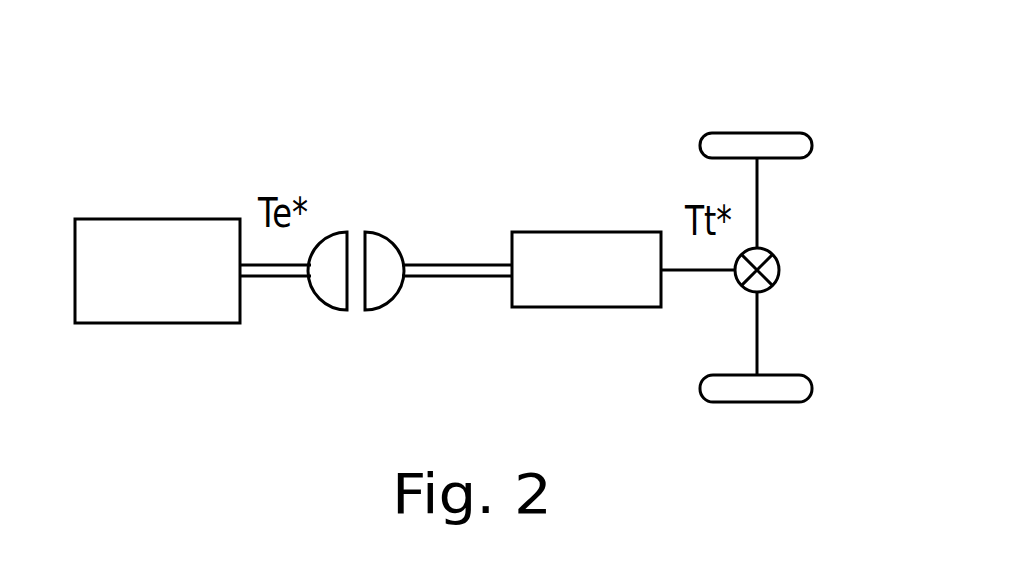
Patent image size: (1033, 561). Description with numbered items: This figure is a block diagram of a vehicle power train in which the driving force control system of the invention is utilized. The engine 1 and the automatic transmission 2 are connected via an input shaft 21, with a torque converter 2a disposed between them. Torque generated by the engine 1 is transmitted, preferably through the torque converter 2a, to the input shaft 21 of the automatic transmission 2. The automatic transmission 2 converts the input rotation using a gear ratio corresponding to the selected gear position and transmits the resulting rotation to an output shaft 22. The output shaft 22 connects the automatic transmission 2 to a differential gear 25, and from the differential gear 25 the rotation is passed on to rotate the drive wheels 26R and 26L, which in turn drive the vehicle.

The engine 1 is at (150, 218).
The automatic transmission 2 is at (592, 308).
The torque converter 2a is at (344, 330).
The input shaft 21 is at (454, 280).
The output shaft 22 is at (700, 272).
The differential gear 25 is at (779, 268).
The right drive wheel 26R is at (757, 133).
The left drive wheel 26L is at (757, 403).